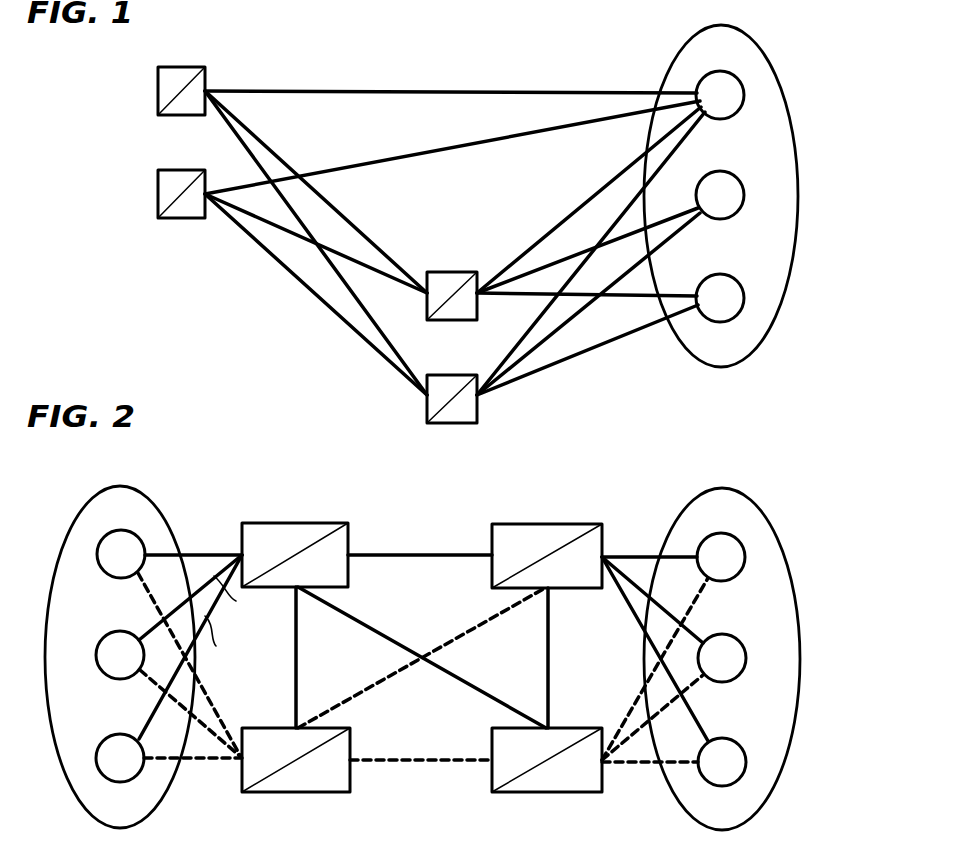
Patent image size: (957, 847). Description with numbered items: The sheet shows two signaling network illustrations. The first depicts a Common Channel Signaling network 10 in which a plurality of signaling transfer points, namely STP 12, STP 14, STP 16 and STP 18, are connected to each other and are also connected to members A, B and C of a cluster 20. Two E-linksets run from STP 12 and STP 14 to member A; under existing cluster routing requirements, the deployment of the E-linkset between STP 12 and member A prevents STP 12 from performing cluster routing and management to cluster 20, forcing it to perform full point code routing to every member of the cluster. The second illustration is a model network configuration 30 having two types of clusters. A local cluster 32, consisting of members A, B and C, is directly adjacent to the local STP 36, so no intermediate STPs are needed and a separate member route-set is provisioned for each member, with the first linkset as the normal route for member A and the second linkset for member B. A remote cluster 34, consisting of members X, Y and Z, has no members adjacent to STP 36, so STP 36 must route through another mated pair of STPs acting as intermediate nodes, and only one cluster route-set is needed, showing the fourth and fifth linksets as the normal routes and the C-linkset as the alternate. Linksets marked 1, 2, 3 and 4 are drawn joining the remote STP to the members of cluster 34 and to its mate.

In FIG. 1, the network 10 is at (241, 39).
In FIG. 1, the signaling transfer point 12 is at (158, 93).
In FIG. 1, the signaling transfer point 14 is at (158, 206).
In FIG. 1, the signaling transfer point 16 is at (451, 272).
In FIG. 1, the signaling transfer point 18 is at (427, 410).
In FIG. 1, the cluster 20 is at (775, 72).
In FIG. 2, the model network configuration 30 is at (619, 446).
In FIG. 2, the local cluster 32 is at (166, 517).
In FIG. 2, the remote cluster 34 is at (778, 536).
In FIG. 2, the local signaling transfer point 36 is at (348, 570).
In FIG. 2, the linkset 1 is at (649, 542).
In FIG. 2, the linkset 2 is at (652, 600).
In FIG. 2, the linkset 3 is at (655, 649).
In FIG. 2, the linkset 4 is at (562, 610).